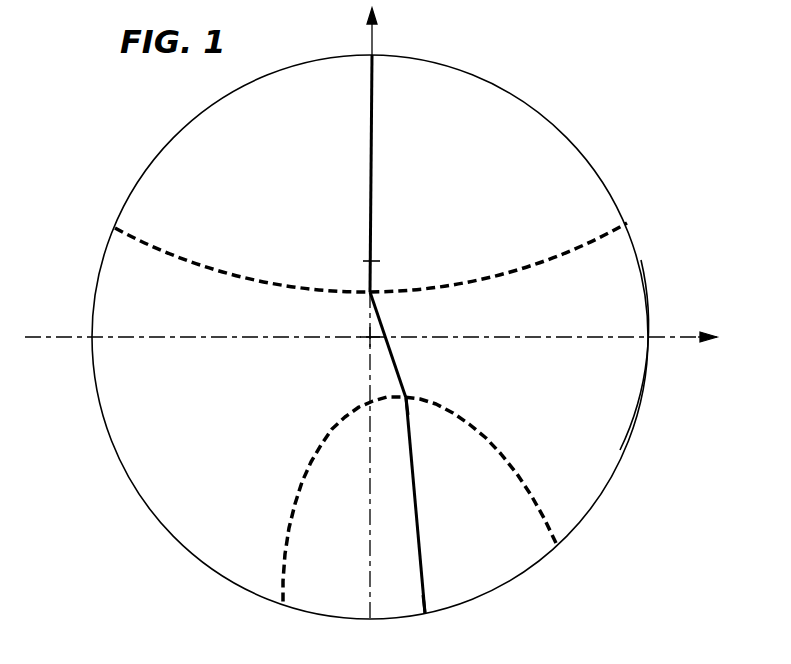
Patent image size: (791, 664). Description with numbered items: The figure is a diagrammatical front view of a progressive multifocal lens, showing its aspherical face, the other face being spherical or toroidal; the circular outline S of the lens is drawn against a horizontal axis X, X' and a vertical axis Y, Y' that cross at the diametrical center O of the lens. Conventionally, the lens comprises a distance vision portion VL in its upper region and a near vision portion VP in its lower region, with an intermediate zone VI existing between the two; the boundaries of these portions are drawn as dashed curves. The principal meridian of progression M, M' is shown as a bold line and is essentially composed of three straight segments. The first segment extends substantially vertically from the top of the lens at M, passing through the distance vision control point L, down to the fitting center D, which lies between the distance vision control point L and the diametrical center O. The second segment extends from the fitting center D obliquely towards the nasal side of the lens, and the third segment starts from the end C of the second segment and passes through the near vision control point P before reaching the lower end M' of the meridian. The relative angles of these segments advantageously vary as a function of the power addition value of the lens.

The spherical surface (eye) S is at (181, 472).
The intermediate zone VI is at (612, 400).
The distance vision portion VL is at (533, 150).
The near vision portion VP is at (513, 543).
The principal meridian of progression M is at (402, 152).
The principal meridian of progression M' is at (468, 616).
The distance vision control point L is at (372, 258).
The fitting center D is at (373, 291).
The end of the second segment C is at (407, 397).
The near vision control point P is at (412, 447).
The diametrical center O is at (368, 337).
The X axis positive X is at (543, 356).
The X axis negative X' is at (197, 357).
The Y axis positive Y is at (359, 31).
The Y axis negative Y' is at (386, 473).